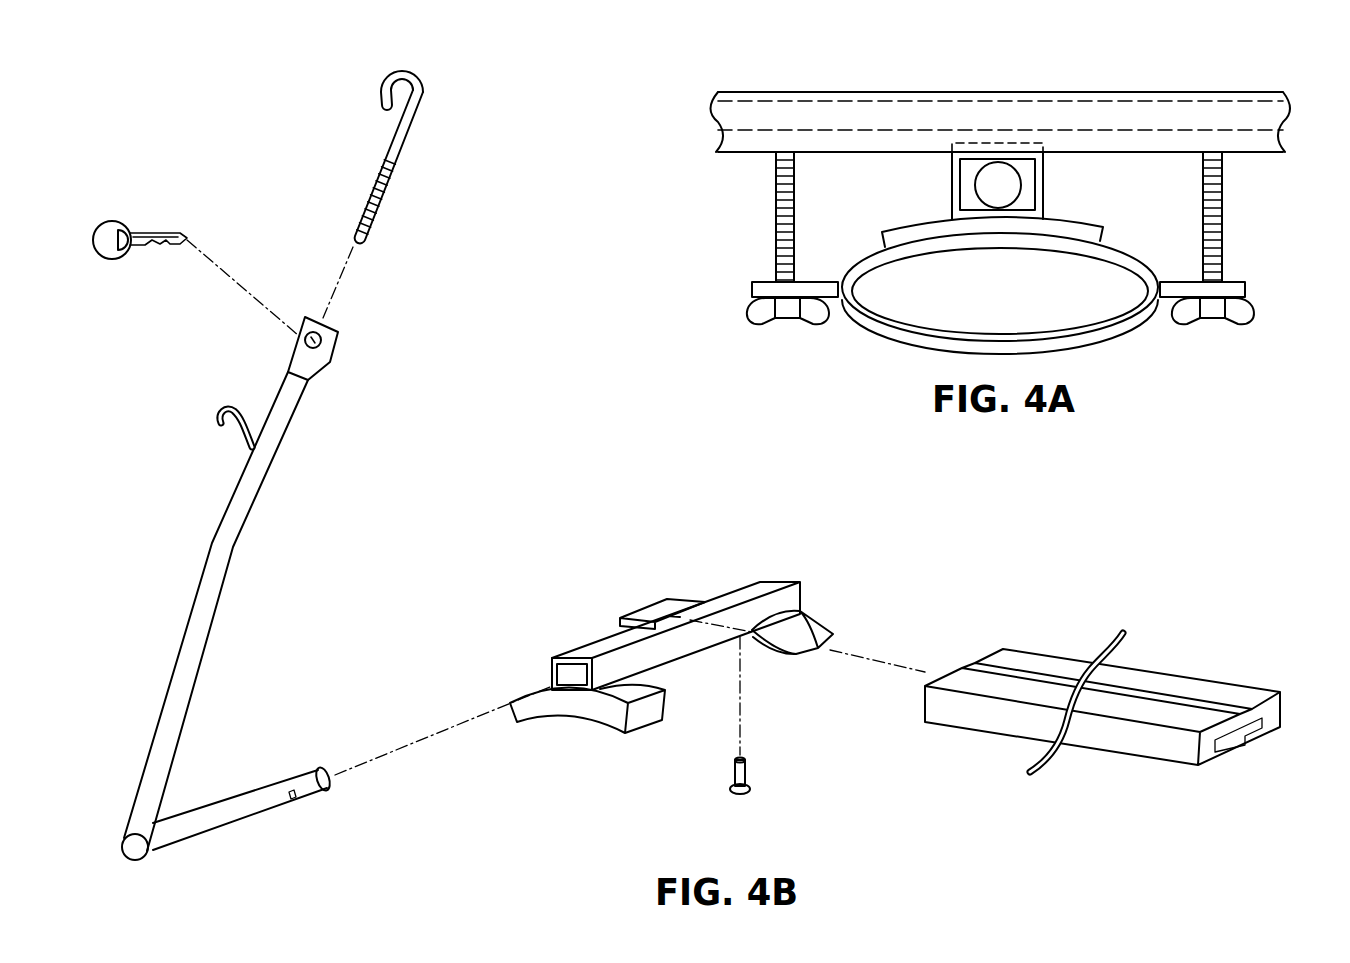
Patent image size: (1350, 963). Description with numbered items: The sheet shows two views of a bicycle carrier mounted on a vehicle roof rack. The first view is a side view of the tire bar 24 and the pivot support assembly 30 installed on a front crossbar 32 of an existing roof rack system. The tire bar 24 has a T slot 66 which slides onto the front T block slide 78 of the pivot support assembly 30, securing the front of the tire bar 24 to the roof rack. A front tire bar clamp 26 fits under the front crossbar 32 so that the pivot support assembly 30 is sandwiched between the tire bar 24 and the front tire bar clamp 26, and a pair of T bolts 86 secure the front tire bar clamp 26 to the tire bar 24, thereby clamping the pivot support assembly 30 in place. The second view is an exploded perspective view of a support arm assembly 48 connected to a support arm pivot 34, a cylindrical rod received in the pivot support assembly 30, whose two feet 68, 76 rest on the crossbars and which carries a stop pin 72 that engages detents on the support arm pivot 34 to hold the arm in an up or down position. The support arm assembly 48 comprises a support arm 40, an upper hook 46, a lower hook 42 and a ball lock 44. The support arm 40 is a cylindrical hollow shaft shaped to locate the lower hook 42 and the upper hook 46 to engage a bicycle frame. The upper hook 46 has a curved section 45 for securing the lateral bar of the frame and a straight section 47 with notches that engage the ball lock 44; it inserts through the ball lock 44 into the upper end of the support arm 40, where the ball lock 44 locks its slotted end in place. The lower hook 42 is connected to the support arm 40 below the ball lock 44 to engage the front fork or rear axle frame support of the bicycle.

In FIG. 4A, the tire bar 24 is at (1140, 92).
In FIG. 4A, the front tire bar clamp 26 is at (1117, 334).
In FIG. 4A, the pivot support assembly 30 is at (925, 218).
In FIG. 4B, the pivot support assembly 30 is at (710, 574).
In FIG. 4A, the front crossbar 32 is at (872, 256).
In FIG. 4B, the support arm pivot 34 is at (264, 787).
In FIG. 4B, the support arm 40 is at (213, 540).
In FIG. 4B, the lower hook 42 is at (219, 410).
In FIG. 4B, the ball lock 44 is at (327, 362).
In FIG. 4B, the curved section 45 is at (380, 105).
In FIG. 4B, the upper hook 46 is at (408, 148).
In FIG. 4B, the straight section 47 is at (380, 212).
In FIG. 4B, the support arm assembly 48 is at (157, 555).
In FIG. 4A, the T slot 66 is at (1262, 138).
In FIG. 4B, the T slot 66 is at (1243, 745).
In FIG. 4B, the foot 68 is at (818, 632).
In FIG. 4B, the stop pin 72 is at (750, 778).
In FIG. 4B, the foot 76 is at (645, 715).
In FIG. 4A, the front T block slide 78 is at (1000, 141).
In FIG. 4B, the front T block slide 78 is at (640, 610).
In FIG. 4A, the T bolts 86 is at (777, 230).